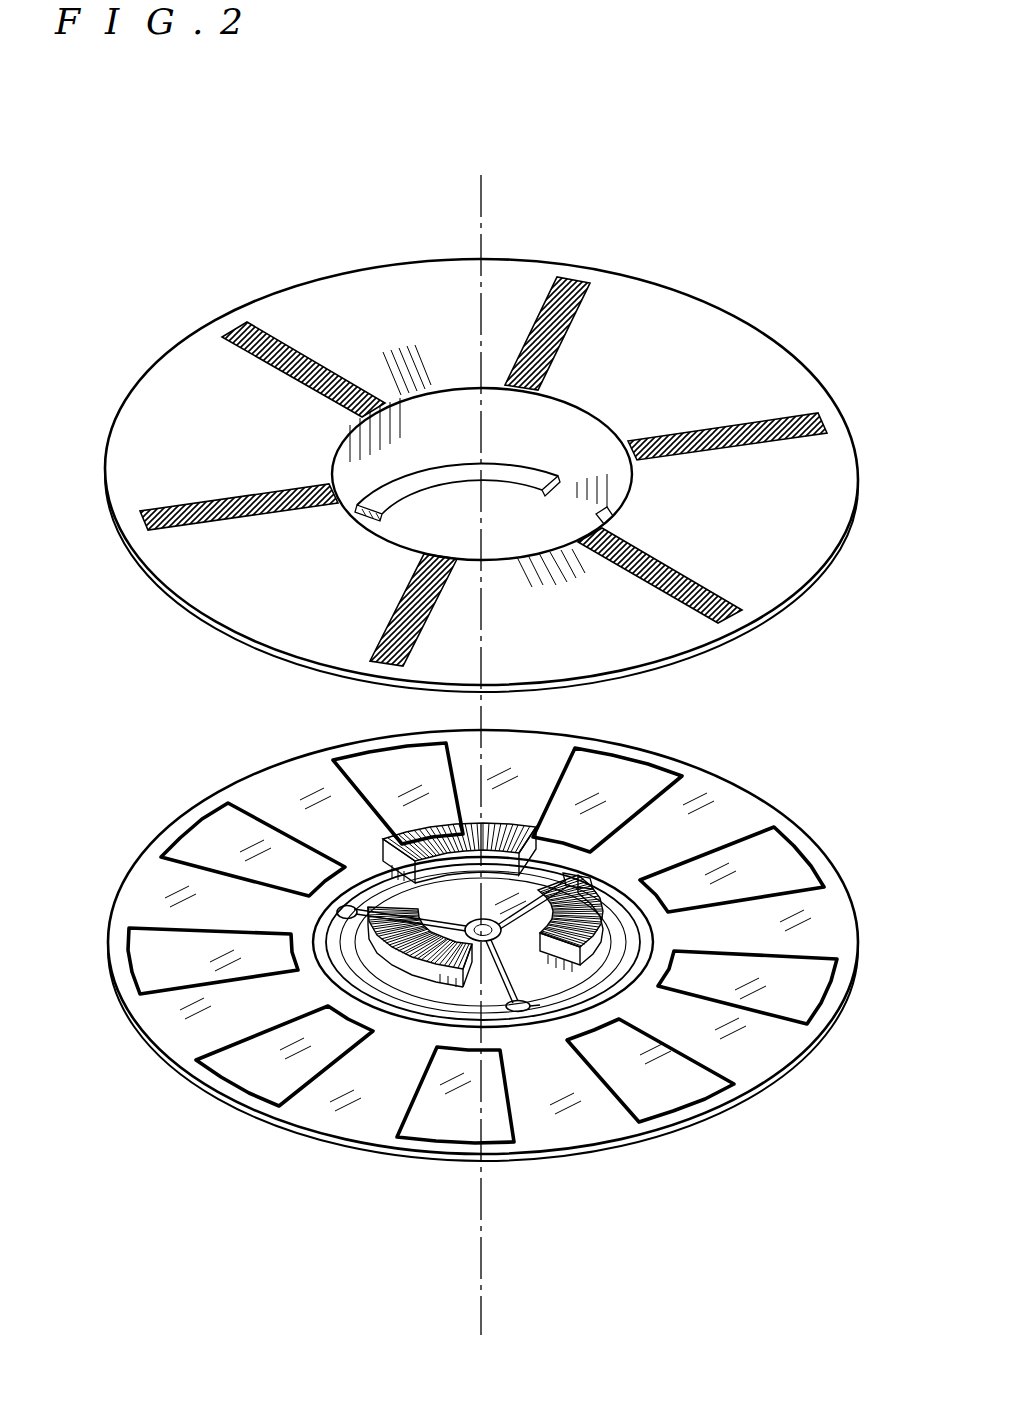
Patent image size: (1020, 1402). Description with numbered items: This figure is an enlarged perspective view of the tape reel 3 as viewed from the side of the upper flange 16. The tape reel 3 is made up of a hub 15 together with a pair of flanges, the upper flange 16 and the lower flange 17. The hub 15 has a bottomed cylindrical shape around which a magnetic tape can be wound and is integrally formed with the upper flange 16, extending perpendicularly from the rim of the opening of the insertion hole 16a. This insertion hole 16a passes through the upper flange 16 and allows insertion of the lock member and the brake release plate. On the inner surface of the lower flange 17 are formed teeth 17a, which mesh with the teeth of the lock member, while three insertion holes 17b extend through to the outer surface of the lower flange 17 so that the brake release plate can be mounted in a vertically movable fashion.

The tape reel 3 is at (492, 155).
The hub 15 is at (612, 480).
The upper flange 16 is at (305, 298).
The insertion hole 16a is at (437, 418).
The lower flange 17 is at (835, 915).
The teeth 17a is at (430, 853).
The insertion holes 17b is at (580, 880).